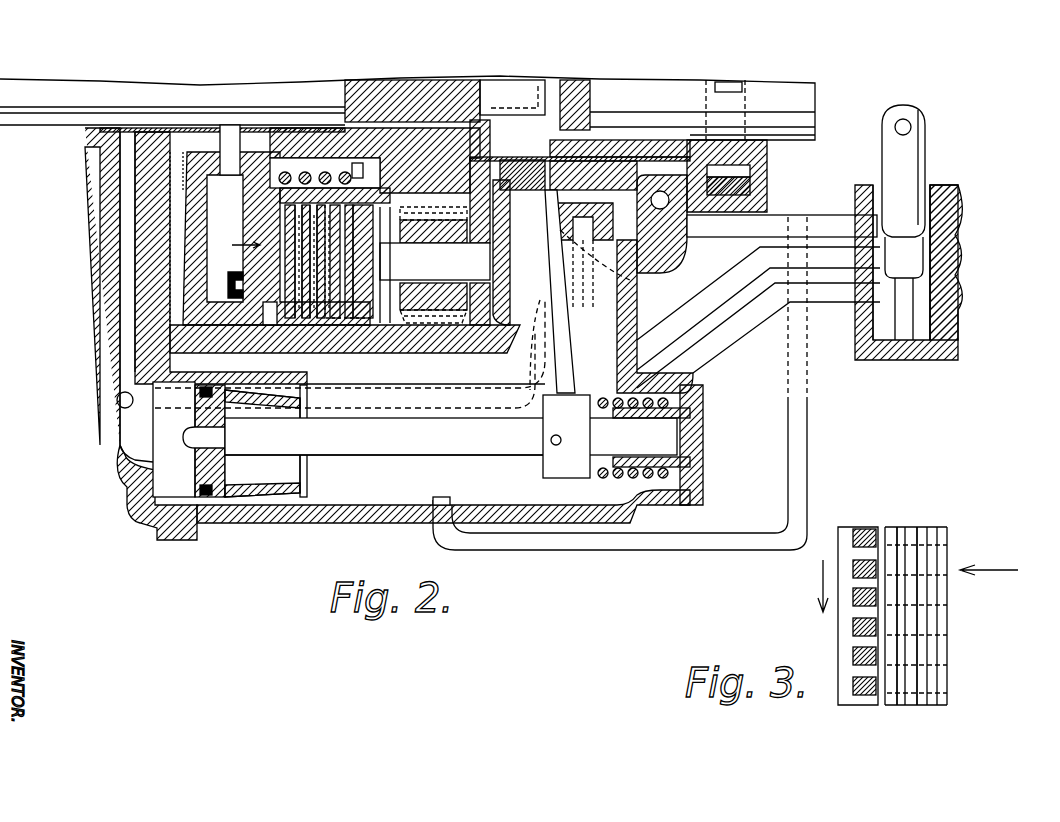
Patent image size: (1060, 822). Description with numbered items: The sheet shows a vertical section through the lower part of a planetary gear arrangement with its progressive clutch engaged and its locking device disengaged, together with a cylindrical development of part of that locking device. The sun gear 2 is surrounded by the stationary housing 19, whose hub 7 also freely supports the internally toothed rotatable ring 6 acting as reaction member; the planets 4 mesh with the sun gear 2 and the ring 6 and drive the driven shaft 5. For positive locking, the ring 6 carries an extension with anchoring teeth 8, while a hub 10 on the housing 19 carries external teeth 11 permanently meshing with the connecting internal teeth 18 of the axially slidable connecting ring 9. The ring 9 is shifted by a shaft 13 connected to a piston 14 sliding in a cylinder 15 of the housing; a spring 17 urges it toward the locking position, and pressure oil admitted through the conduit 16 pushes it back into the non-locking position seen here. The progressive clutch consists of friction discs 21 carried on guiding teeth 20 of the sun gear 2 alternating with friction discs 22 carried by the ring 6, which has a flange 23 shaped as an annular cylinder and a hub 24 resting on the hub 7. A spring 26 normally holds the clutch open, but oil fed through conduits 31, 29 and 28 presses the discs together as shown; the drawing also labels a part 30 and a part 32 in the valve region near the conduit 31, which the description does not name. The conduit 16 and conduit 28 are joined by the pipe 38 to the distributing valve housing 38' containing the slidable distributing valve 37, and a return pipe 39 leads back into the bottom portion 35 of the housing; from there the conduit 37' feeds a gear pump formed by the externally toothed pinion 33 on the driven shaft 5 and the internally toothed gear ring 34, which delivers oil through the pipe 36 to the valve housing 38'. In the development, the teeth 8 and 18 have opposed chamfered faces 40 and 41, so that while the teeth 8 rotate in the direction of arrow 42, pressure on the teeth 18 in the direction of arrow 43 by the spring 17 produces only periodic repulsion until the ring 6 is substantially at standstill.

In FIG. 2, the sun gear 2 is at (430, 190).
In FIG. 2, the planets 4 is at (446, 228).
In FIG. 2, the driven shaft 5 is at (790, 100).
In FIG. 2, the internally toothed rotatable ring 6 is at (460, 345).
In FIG. 2, the hub 7 is at (197, 143).
In FIG. 2, the anchoring teeth 8 is at (528, 192).
In FIG. 3, the anchoring teeth 8 is at (855, 632).
In FIG. 2, the connecting ring 9 is at (580, 291).
In FIG. 3, the connecting ring 9 is at (940, 652).
In FIG. 2, the hub 10 is at (575, 175).
In FIG. 2, the external teeth 11 is at (590, 197).
In FIG. 2, the shaft 13 is at (490, 440).
In FIG. 2, the piston 14 is at (225, 458).
In FIG. 2, the cylinder 15 is at (160, 465).
In FIG. 2, the conduit 16 is at (125, 420).
In FIG. 2, the spring 17 is at (700, 475).
In FIG. 2, the connecting internal teeth 18 is at (652, 190).
In FIG. 3, the connecting internal teeth 18 is at (917, 708).
In FIG. 2, the housing 19 is at (103, 185).
In FIG. 2, the guiding teeth 20 is at (267, 155).
In FIG. 2, the friction discs 21 is at (285, 350).
In FIG. 2, the friction discs 22 is at (335, 350).
In FIG. 2, the flange 23 is at (185, 233).
In FIG. 2, the hub 24 is at (297, 185).
In FIG. 2, the spring 26 is at (325, 160).
In FIG. 2, the conduit 28 is at (128, 250).
In FIG. 2, the conduit 29 is at (137, 135).
In FIG. 2, the valve stem 30 is at (230, 150).
In FIG. 2, the conduit 31 is at (225, 238).
In FIG. 2, the valve port 32 is at (238, 261).
In FIG. 2, the externally toothed pinion 33 is at (770, 150).
In FIG. 2, the internally toothed gear ring 34 is at (755, 185).
In FIG. 2, the bottom portion 35 is at (335, 515).
In FIG. 2, the pipe 36 is at (825, 224).
In FIG. 2, the distributing valve 37 is at (929, 222).
In FIG. 2, the conduit 37' is at (648, 383).
In FIG. 2, the pipe 38 is at (758, 308).
In FIG. 2, the distributing valve housing 38' is at (929, 272).
In FIG. 2, the return pipe 39 is at (705, 338).
In FIG. 3, the chamfered faces 40 is at (855, 690).
In FIG. 3, the chamfered faces 41 is at (880, 710).
In FIG. 3, the arrow 42 is at (823, 568).
In FIG. 3, the arrow 43 is at (982, 572).